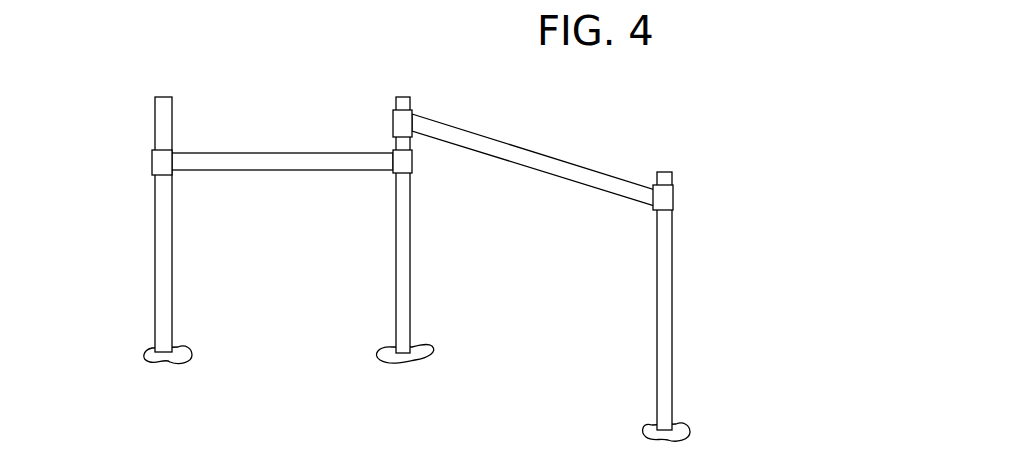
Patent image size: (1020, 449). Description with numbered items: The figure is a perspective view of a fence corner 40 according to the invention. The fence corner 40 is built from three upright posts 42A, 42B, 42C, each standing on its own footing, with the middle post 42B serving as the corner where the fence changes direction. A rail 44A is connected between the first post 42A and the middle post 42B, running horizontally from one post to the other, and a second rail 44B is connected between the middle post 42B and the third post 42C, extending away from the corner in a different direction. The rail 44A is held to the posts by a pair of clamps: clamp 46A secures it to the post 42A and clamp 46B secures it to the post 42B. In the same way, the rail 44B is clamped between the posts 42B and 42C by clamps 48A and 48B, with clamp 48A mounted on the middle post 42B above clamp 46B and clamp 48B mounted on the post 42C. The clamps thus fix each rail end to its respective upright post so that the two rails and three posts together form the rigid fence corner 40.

The fence corner 40 is at (760, 128).
The upright post 42A is at (153, 304).
The upright post 42B is at (395, 312).
The upright post 42C is at (672, 375).
The rail 44A is at (228, 153).
The rail 44B is at (552, 153).
The clamp 46A is at (152, 161).
The clamp 46B is at (393, 176).
The clamp 48A is at (385, 116).
The clamp 48B is at (673, 197).